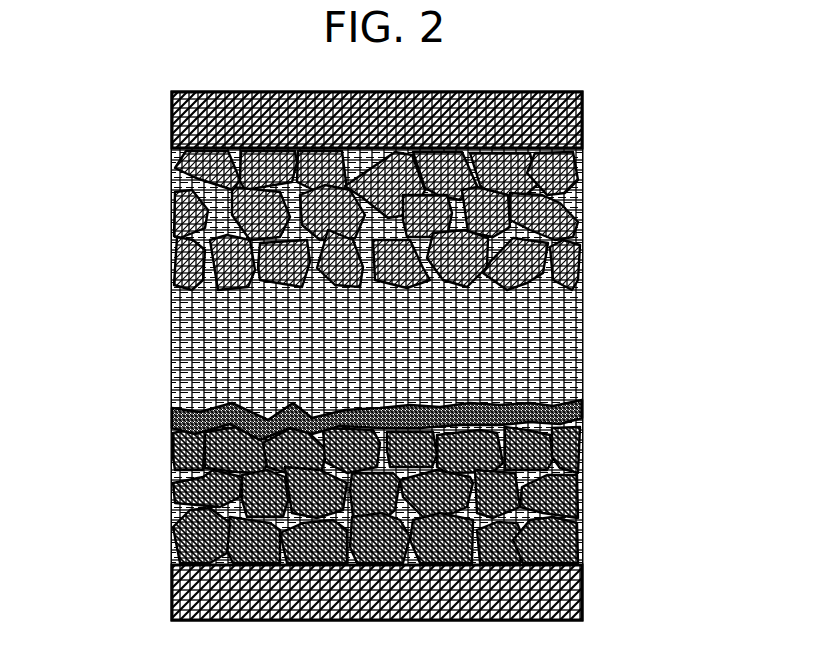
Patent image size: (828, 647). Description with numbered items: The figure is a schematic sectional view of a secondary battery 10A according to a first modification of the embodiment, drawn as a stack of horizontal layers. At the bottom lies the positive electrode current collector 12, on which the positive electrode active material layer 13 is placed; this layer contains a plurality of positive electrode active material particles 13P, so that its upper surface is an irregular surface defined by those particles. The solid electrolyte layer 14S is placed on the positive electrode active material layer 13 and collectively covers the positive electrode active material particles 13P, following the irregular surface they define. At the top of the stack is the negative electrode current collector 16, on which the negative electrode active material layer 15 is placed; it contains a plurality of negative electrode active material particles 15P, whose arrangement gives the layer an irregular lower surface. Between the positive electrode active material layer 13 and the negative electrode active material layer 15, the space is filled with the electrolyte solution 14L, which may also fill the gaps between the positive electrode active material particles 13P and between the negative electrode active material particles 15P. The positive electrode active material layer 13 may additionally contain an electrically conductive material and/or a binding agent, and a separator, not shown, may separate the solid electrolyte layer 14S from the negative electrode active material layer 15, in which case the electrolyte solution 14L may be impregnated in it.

The secondary battery 10A is at (567, 58).
The negative electrode current collector 16 is at (583, 118).
The negative electrode active material layer 15 is at (359, 220).
The negative electrode active material particles 15P is at (173, 178).
The electrolyte solution 14L is at (553, 356).
The solid electrolyte layer 14S is at (582, 407).
The positive electrode active material layer 13 is at (359, 495).
The positive electrode active material particles 13P is at (173, 450).
The positive electrode current collector 12 is at (566, 596).